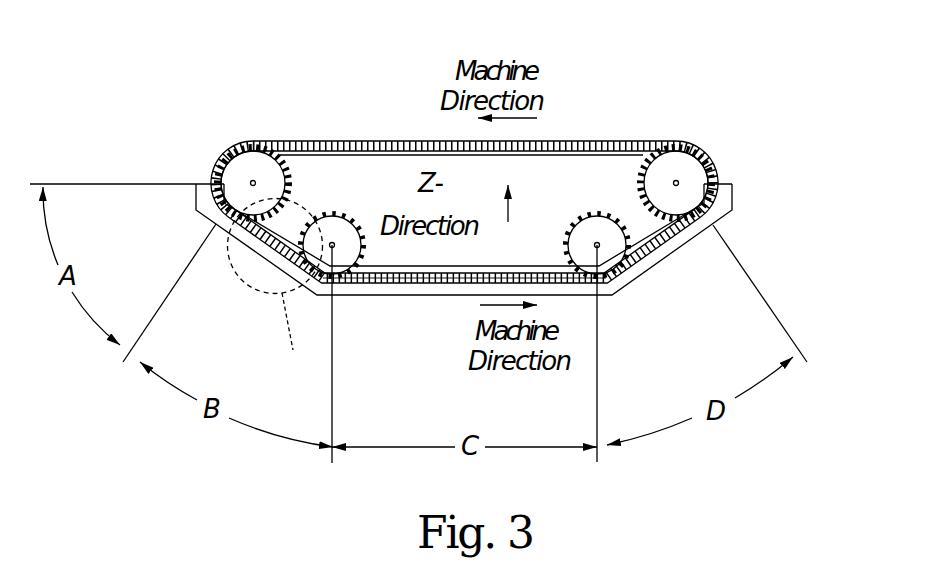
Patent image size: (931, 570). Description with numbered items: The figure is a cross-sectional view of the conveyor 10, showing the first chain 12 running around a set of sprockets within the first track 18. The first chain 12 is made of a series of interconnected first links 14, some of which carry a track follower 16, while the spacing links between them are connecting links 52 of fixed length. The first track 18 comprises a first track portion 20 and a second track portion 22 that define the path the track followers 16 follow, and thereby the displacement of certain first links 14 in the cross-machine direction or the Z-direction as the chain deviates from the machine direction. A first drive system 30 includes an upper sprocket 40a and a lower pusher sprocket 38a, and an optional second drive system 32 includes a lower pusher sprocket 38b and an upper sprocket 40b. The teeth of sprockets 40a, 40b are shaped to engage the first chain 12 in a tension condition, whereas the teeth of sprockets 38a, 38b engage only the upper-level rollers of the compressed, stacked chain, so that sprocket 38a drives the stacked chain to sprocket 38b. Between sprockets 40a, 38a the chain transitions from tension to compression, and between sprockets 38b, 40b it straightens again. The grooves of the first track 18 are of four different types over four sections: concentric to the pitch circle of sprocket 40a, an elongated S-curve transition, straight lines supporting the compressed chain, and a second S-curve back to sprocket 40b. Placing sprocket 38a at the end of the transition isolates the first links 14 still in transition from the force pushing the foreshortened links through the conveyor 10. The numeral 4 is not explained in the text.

The reference line 4 is at (296, 332).
The conveyor 10 is at (436, 221).
The first chain 12 is at (409, 128).
The first links 14 is at (335, 140).
The track follower 16 is at (382, 140).
The first track 18 is at (194, 207).
The first track portion 20 is at (210, 296).
The second track portion 22 is at (256, 262).
The first drive system 30 is at (302, 221).
The second drive system 32 is at (651, 217).
The pusher sprocket 38a is at (343, 257).
The pusher sprocket 38b is at (607, 252).
The sprocket 40a is at (242, 168).
The sprocket 40b is at (687, 163).
The connecting links 52 is at (588, 140).